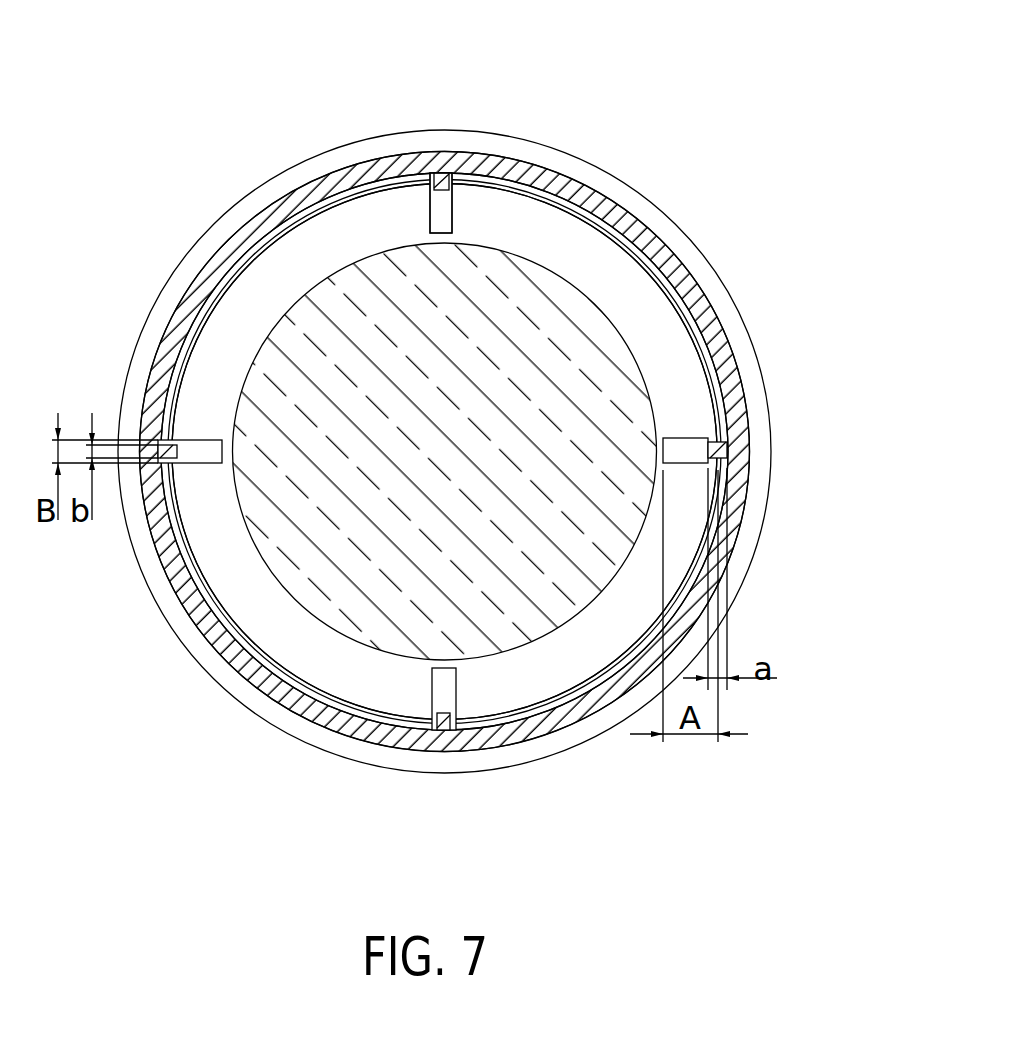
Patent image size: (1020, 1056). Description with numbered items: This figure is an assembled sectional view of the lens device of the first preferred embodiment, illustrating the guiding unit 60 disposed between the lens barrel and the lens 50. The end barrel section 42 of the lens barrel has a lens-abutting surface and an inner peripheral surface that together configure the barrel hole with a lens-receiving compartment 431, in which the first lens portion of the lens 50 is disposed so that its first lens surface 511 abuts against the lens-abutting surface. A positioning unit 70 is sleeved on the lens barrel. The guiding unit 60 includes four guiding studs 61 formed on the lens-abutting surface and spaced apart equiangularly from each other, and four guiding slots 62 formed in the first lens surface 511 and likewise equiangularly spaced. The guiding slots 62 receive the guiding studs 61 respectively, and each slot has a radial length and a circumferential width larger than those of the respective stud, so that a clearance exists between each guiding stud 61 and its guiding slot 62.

The positioning unit 70 is at (590, 160).
The end barrel section 42 is at (507, 165).
The lens-receiving compartment 431 is at (470, 175).
The lens 50 is at (273, 207).
The first lens surface 511 is at (333, 213).
The guiding unit 60 is at (433, 215).
The guiding studs 61 is at (409, 160).
The guiding slots 62 is at (428, 200).